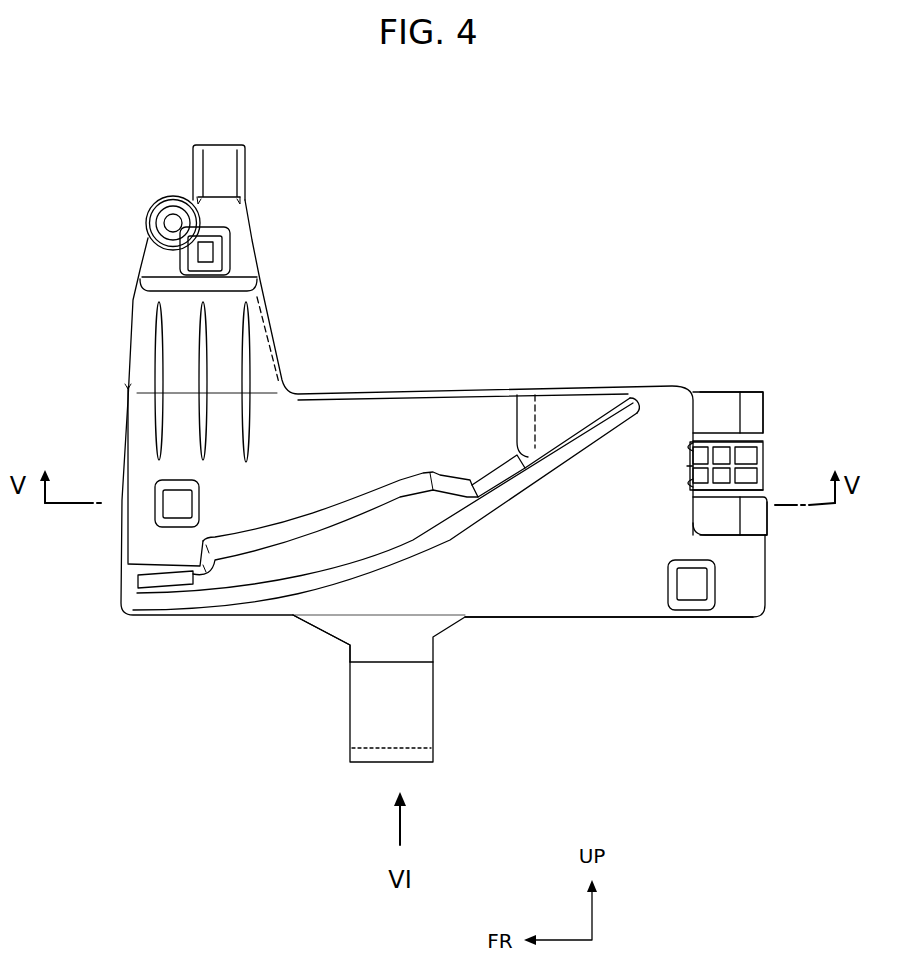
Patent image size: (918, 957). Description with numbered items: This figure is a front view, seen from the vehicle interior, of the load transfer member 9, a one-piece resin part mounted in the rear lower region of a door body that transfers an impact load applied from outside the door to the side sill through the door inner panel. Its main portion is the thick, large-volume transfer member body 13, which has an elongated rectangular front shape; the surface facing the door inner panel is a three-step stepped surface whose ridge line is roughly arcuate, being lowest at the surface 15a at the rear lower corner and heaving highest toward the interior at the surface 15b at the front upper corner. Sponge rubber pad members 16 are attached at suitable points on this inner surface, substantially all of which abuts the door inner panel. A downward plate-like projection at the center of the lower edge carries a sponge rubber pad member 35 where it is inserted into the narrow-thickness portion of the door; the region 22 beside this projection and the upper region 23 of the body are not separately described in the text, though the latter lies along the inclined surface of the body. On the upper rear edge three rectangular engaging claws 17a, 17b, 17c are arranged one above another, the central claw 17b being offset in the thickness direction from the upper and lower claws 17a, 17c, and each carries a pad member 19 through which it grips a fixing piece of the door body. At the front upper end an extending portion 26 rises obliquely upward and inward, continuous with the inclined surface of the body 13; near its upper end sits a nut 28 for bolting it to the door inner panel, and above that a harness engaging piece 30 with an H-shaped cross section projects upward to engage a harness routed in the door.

The load transfer member 9 is at (490, 237).
The transfer member body 13 is at (550, 618).
The surface including the rear lower corner 15a is at (635, 587).
The surface including the front upper corner 15b is at (242, 455).
The pad members 16 is at (222, 247).
The engaging claw 17a is at (733, 392).
The engaging claw 17b is at (763, 455).
The engaging claw 17c is at (762, 538).
The pad members 19 is at (713, 405).
The notch 22 is at (292, 608).
The upper wall 23 is at (375, 420).
The extending portion 26 is at (135, 337).
The nut 28 is at (160, 213).
The harness engaging piece 30 is at (217, 152).
The pad member 35 is at (427, 728).